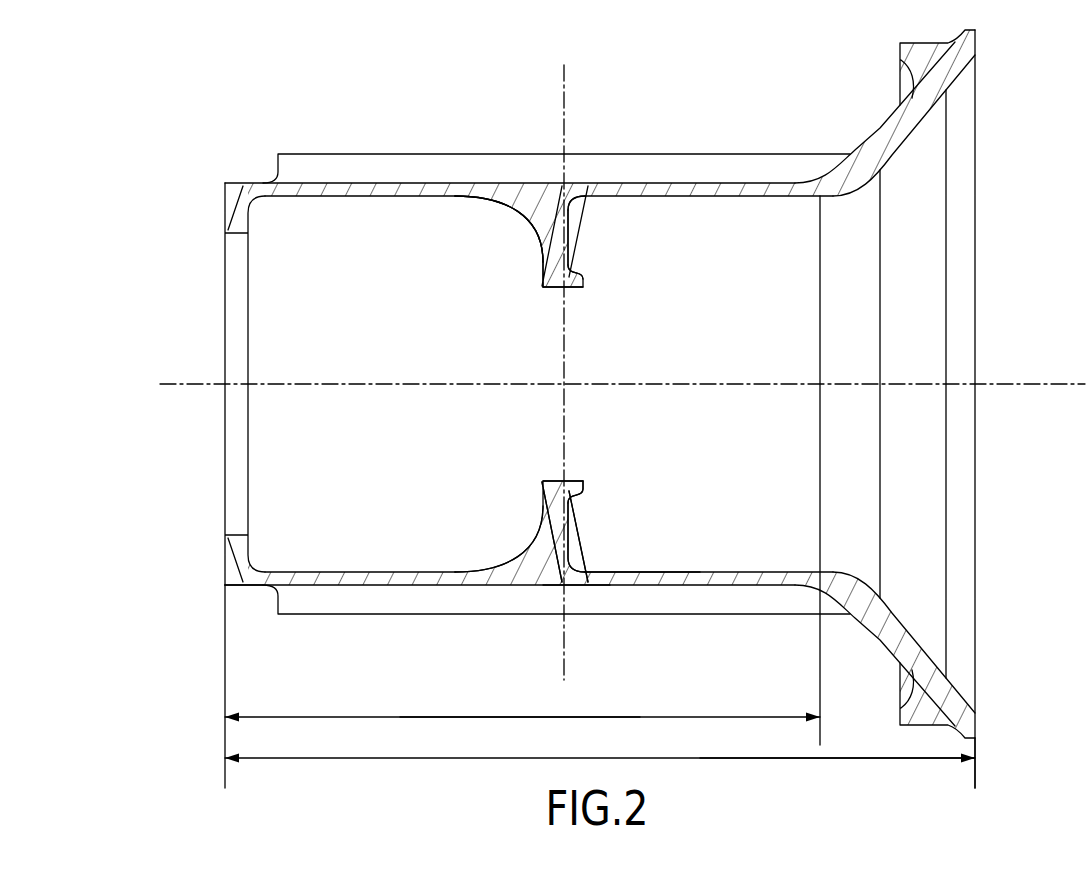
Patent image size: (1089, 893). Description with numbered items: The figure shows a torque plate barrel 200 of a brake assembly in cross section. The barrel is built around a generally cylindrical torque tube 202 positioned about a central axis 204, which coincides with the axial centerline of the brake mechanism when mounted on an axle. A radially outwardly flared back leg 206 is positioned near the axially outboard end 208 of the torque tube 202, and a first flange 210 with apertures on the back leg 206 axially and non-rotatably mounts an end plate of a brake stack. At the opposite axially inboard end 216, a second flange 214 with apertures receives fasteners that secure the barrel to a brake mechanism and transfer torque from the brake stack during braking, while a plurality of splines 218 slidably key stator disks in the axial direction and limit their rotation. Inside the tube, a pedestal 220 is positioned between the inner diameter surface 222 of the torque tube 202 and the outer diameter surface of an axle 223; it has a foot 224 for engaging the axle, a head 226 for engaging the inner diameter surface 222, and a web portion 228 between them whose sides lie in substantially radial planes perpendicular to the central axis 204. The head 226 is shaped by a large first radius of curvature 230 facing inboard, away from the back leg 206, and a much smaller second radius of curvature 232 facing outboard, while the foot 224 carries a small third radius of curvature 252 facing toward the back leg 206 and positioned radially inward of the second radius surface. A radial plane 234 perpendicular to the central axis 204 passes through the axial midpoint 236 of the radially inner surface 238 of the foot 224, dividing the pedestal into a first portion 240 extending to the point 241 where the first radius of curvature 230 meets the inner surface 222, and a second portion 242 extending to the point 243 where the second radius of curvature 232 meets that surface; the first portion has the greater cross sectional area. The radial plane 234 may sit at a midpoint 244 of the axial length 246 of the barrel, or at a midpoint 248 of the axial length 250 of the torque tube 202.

The torque plate barrel 200 is at (185, 100).
The torque tube 202 is at (355, 609).
The central axis 204 is at (1040, 386).
The back leg 206 is at (948, 678).
The axially outboard end 208 is at (843, 635).
The first flange 210 is at (902, 63).
The second flange 214 is at (225, 206).
The axially inboard end 216 is at (250, 603).
The splines 218 is at (318, 154).
The pedestal 220 is at (510, 524).
The inner diameter surface 222 is at (598, 570).
The axle 223 is at (550, 479).
The foot 224 is at (543, 276).
The head 226 is at (496, 202).
The web portion 228 is at (569, 232).
The first radius of curvature 230 is at (510, 226).
The second radius of curvature 232 is at (595, 207).
The radial plane 234 is at (566, 100).
The axial midpoint 236 is at (563, 288).
The radially inner surface 238 is at (578, 479).
The first portion 240 is at (532, 578).
The point 241 is at (473, 575).
The second portion 242 is at (578, 582).
The point 243 is at (599, 574).
The midpoint 244 is at (600, 758).
The axial length 246 is at (712, 758).
The midpoint 248 is at (523, 713).
The axial length 250 is at (400, 717).
The third radius of curvature 252 is at (595, 262).